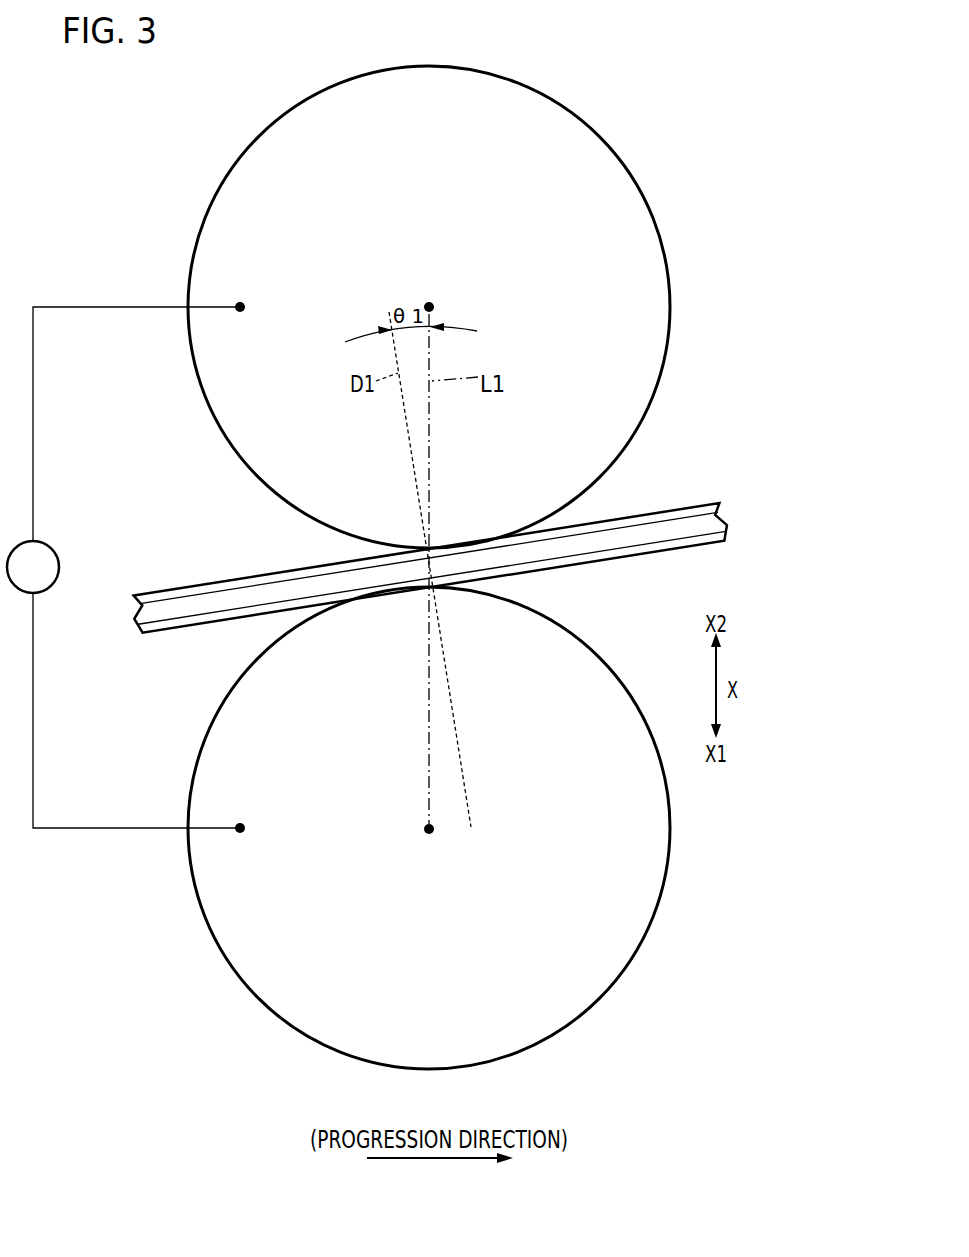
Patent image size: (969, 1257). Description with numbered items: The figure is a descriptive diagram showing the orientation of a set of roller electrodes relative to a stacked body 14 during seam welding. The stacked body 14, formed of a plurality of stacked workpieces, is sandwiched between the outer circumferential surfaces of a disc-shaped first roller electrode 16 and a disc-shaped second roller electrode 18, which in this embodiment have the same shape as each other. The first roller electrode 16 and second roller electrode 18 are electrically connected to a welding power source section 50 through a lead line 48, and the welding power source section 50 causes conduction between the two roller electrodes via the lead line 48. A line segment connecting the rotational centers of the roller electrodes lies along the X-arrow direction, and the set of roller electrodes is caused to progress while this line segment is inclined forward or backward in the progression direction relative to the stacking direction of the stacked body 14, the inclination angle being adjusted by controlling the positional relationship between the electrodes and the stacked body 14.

The stacked body 14 is at (678, 503).
The first roller electrode 16 is at (608, 689).
The second roller electrode 18 is at (608, 162).
The lead line 48 is at (103, 305).
The welding power source section 50 is at (53, 546).